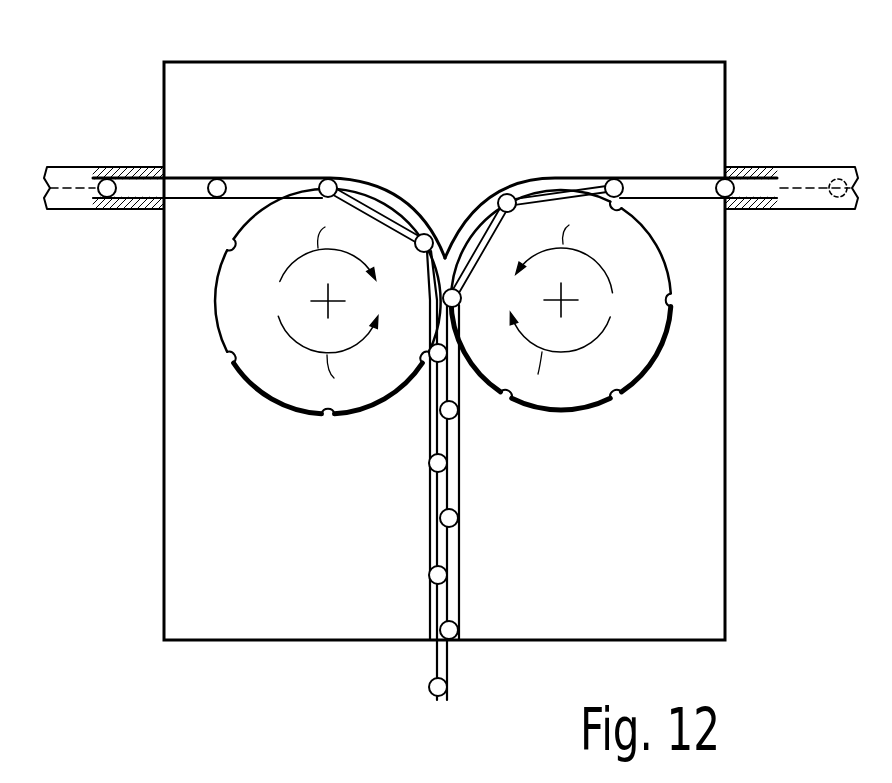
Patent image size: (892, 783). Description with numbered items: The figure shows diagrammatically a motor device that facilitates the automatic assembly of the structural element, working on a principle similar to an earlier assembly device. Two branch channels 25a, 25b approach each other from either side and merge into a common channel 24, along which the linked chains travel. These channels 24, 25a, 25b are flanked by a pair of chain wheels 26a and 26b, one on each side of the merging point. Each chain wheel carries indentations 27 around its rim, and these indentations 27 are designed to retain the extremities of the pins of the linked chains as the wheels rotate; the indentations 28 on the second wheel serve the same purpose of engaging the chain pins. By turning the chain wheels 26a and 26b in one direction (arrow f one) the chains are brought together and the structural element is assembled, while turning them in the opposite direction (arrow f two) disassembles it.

The channel 24 is at (455, 500).
The channel 25a is at (387, 193).
The channel 25b is at (539, 183).
The chain wheel 26a is at (282, 381).
The chain wheel 26b is at (593, 383).
The indentation 27 is at (232, 359).
The notches of right roller 28 is at (617, 400).